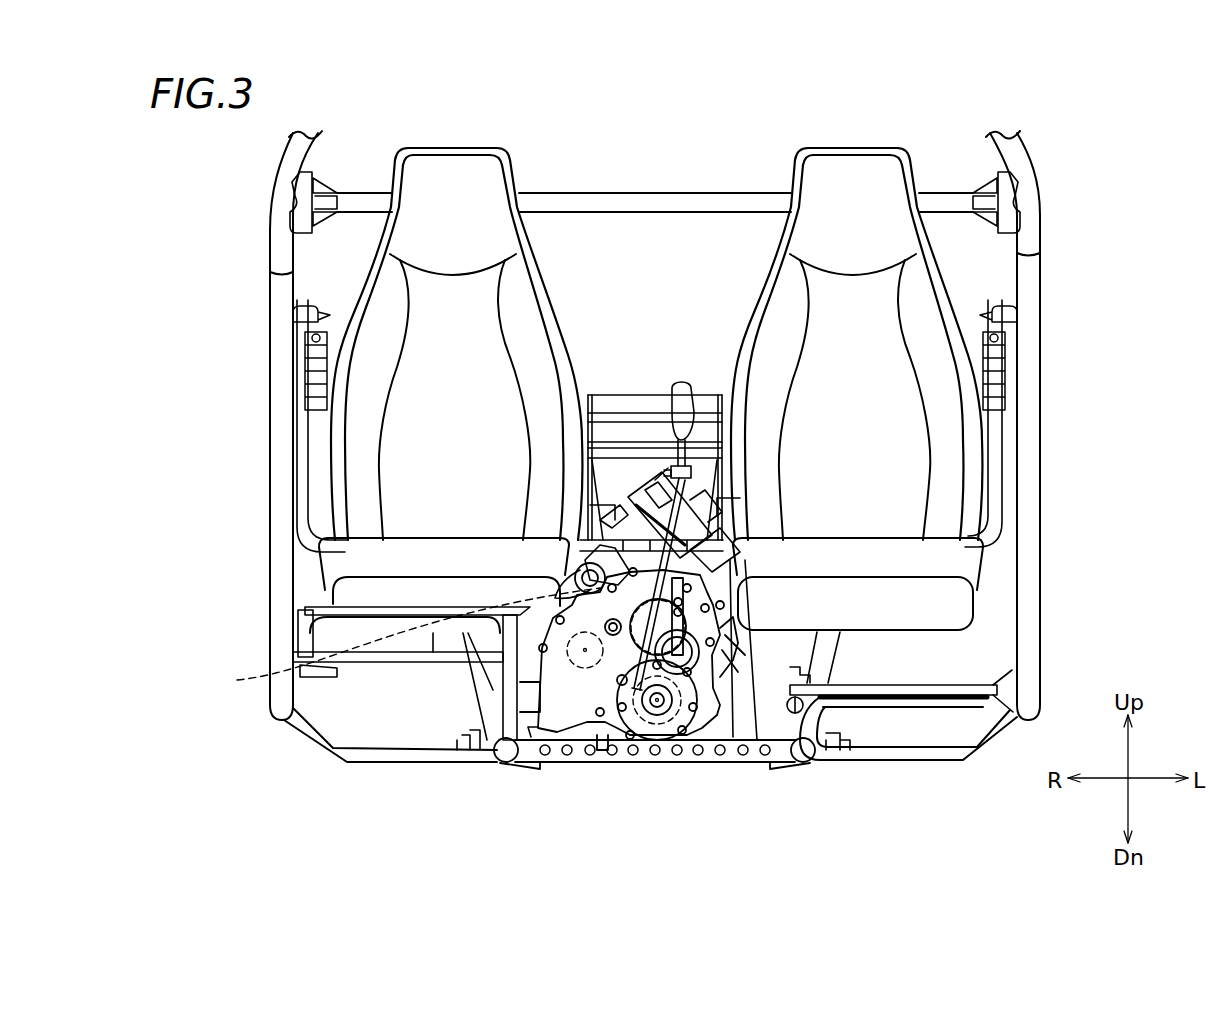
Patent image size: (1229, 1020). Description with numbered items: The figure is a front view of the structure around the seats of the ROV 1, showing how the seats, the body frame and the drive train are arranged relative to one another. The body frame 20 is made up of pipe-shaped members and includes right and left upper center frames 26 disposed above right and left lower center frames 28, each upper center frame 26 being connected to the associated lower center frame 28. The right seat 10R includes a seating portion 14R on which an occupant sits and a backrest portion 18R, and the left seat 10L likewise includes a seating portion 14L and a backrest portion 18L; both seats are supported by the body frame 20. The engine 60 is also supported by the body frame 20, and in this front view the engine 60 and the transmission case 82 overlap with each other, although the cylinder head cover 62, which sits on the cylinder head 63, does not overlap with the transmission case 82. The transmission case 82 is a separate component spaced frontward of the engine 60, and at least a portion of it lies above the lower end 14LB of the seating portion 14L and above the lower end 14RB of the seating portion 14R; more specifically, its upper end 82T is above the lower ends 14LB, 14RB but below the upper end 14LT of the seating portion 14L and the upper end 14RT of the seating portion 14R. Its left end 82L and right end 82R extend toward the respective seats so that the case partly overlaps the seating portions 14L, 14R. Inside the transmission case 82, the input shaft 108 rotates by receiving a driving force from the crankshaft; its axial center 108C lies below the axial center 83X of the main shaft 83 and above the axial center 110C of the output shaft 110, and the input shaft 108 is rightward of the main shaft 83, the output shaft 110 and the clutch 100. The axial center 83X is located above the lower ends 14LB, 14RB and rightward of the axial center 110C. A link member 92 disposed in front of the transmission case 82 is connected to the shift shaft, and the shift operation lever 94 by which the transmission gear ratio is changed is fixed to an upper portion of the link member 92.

The ROV 1 is at (1103, 297).
The right seat 10R is at (393, 167).
The left seat 10L is at (913, 167).
The seating portion 14R is at (423, 562).
The seating portion 14L is at (917, 553).
The upper end of seating portion 14RT is at (323, 517).
The upper end of seating portion 14LT is at (983, 520).
The lower end of seating portion 14RB is at (433, 652).
The lower end of seating portion 14LB is at (897, 632).
The backrest portion 18R is at (447, 347).
The backrest portion 18L is at (877, 360).
The body frame 20 is at (1040, 263).
The upper center frame 26 is at (278, 215).
The lower center frame 28 is at (278, 608).
The engine 60 is at (637, 487).
The cylinder head cover 62 is at (717, 498).
The cylinder head 63 is at (615, 506).
The transmission case 82 is at (773, 753).
The upper end of transmission case 82T is at (650, 490).
The right end of transmission case 82R is at (531, 740).
The left end of transmission case 82L is at (733, 762).
The main shaft 83 is at (683, 735).
The axial center of main shaft 83X is at (395, 641).
The link member 92 is at (642, 733).
The shift operation lever 94 is at (685, 385).
The clutch 100 is at (688, 740).
The input shaft 108 is at (585, 653).
The axial center of input shaft 108C is at (585, 654).
The output shaft 110 is at (657, 720).
The axial center of output shaft 110C is at (657, 703).